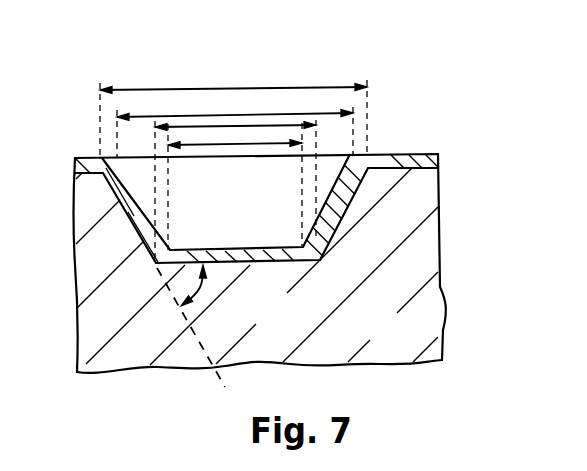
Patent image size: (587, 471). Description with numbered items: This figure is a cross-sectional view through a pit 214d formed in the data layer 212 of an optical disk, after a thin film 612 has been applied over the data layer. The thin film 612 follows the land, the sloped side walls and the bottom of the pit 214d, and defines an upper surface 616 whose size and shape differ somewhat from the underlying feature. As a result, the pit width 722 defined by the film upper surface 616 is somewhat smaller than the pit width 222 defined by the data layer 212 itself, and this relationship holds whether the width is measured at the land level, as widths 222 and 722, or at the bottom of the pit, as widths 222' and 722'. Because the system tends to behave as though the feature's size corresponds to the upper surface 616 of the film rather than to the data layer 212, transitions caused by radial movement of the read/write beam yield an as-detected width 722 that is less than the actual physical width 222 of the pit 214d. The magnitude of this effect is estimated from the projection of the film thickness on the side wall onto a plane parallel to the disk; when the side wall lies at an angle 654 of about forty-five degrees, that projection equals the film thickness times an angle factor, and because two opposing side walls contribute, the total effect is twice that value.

The data layer 212 is at (423, 337).
The thin film 612 is at (291, 180).
The upper surface of the film 616 is at (438, 160).
The pit 214d is at (126, 183).
The side wall angle 654 is at (206, 289).
The pit width 222 is at (233, 94).
The as-detected pit width 722 is at (235, 94).
The pit width at bottom of the feature 222' is at (235, 149).
The as-detected pit width at bottom of the feature 722' is at (245, 138).